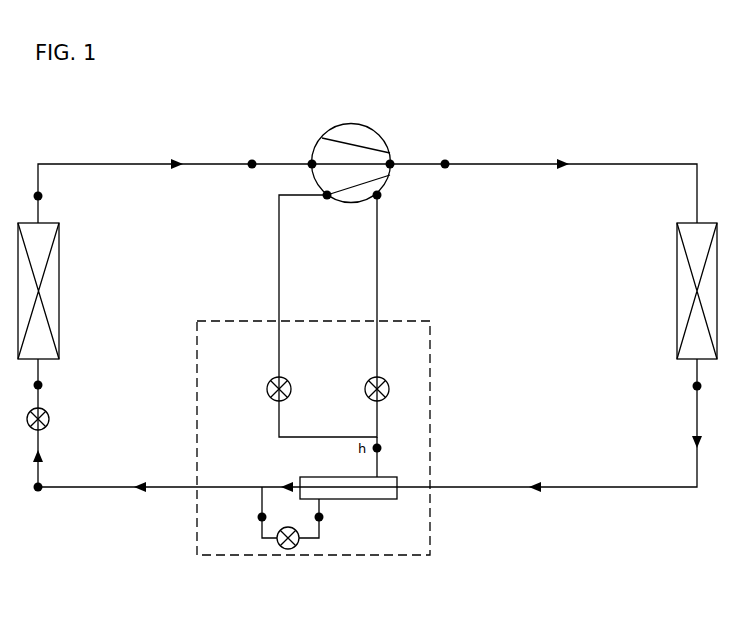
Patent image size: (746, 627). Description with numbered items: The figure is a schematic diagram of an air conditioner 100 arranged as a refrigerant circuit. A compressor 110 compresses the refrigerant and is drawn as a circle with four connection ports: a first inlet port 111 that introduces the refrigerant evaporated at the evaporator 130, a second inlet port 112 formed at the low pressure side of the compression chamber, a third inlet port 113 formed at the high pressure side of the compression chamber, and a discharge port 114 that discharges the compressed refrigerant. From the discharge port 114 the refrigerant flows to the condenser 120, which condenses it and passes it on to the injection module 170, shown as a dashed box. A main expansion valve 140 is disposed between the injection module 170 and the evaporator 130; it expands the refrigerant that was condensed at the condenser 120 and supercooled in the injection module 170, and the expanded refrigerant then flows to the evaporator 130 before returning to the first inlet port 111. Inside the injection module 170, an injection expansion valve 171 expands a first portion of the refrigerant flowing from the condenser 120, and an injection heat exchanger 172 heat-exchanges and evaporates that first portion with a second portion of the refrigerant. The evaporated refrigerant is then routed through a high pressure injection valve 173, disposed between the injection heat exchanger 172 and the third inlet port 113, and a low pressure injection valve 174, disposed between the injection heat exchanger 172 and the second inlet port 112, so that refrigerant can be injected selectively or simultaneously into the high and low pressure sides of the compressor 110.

The air conditioner 100 is at (570, 104).
The compressor 110 is at (377, 128).
The first inlet port 111 is at (310, 162).
The second inlet port 112 is at (330, 199).
The third inlet port 113 is at (380, 197).
The discharge port 114 is at (402, 160).
The condenser 120 is at (677, 253).
The evaporator 130 is at (59, 253).
The main expansion valve 140 is at (48, 410).
The injection module 170 is at (377, 555).
The injection expansion valve 171 is at (298, 547).
The injection heat exchanger 172 is at (360, 499).
The high pressure injection valve 173 is at (365, 389).
The low pressure injection valve 174 is at (267, 389).